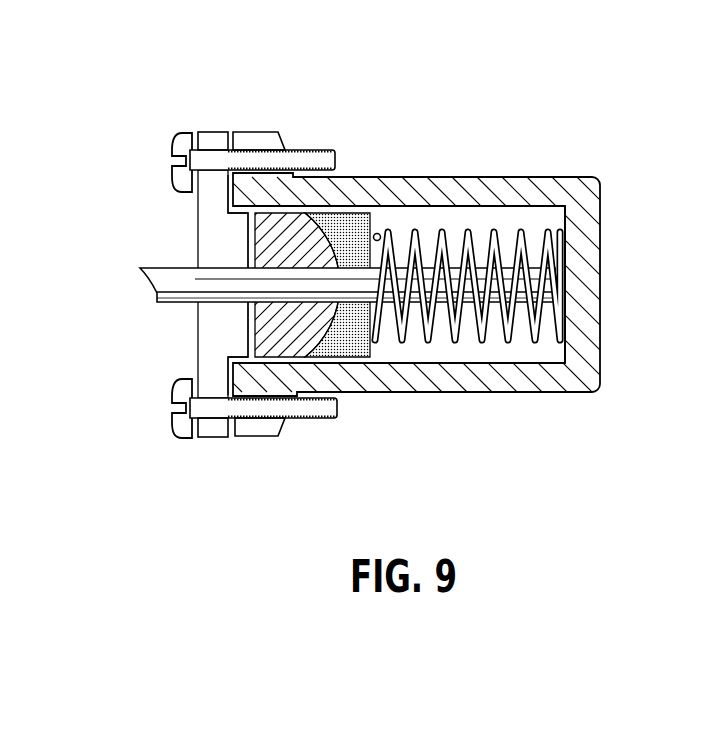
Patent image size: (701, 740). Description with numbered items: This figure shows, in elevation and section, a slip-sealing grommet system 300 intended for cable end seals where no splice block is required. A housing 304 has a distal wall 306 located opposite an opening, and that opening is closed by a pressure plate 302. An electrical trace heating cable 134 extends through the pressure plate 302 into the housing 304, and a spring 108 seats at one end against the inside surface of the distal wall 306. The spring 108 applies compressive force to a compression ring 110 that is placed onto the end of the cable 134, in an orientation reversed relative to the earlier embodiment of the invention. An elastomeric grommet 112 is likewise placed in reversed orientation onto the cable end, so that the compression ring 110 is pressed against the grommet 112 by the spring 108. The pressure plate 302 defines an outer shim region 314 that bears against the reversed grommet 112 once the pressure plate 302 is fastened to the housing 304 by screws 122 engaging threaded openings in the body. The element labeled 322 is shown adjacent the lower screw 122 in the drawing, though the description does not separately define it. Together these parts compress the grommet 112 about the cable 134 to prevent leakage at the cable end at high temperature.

The spring 108 is at (483, 340).
The compression ring 110 is at (353, 228).
The elastomeric grommet 112 is at (270, 327).
The screws 122 is at (181, 136).
The cable 134 is at (167, 278).
The slip-sealing grommet system 300 is at (364, 285).
The pressure plate 302 is at (198, 200).
The housing 304 is at (475, 177).
The distal wall 306 is at (567, 300).
The outer shim region 314 is at (230, 237).
The nut 322 is at (260, 436).